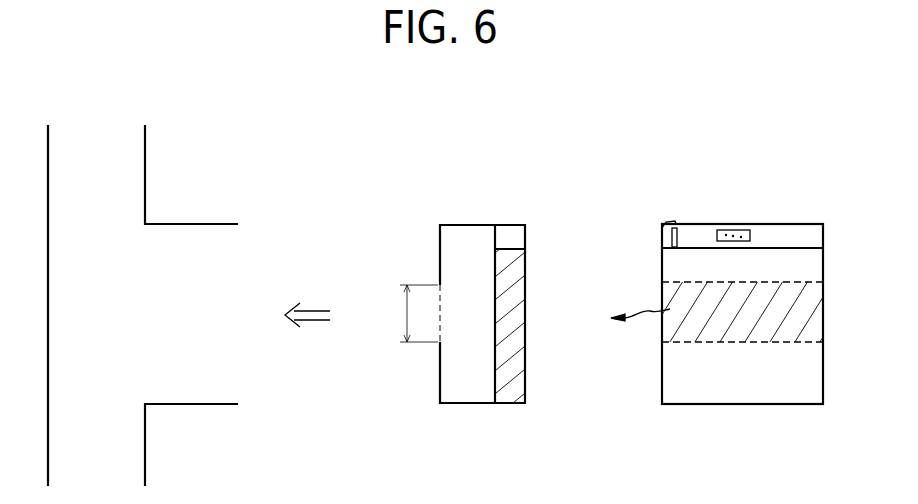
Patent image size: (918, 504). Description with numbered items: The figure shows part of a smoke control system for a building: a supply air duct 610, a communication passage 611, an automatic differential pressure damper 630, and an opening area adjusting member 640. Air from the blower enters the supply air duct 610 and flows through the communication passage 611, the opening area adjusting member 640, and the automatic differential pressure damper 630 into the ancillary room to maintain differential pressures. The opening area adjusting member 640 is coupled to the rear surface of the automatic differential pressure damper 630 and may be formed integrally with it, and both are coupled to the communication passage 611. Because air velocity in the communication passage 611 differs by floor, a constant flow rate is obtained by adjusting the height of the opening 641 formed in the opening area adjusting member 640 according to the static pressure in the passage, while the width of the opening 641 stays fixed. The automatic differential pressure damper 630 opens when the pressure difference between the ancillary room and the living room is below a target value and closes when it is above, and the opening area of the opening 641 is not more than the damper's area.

The supply air duct 610 is at (145, 462).
The communication passage 611 is at (202, 224).
The automatic differential pressure damper 630 is at (508, 225).
The opening area adjusting member 640 is at (440, 253).
The opening 641 is at (448, 329).